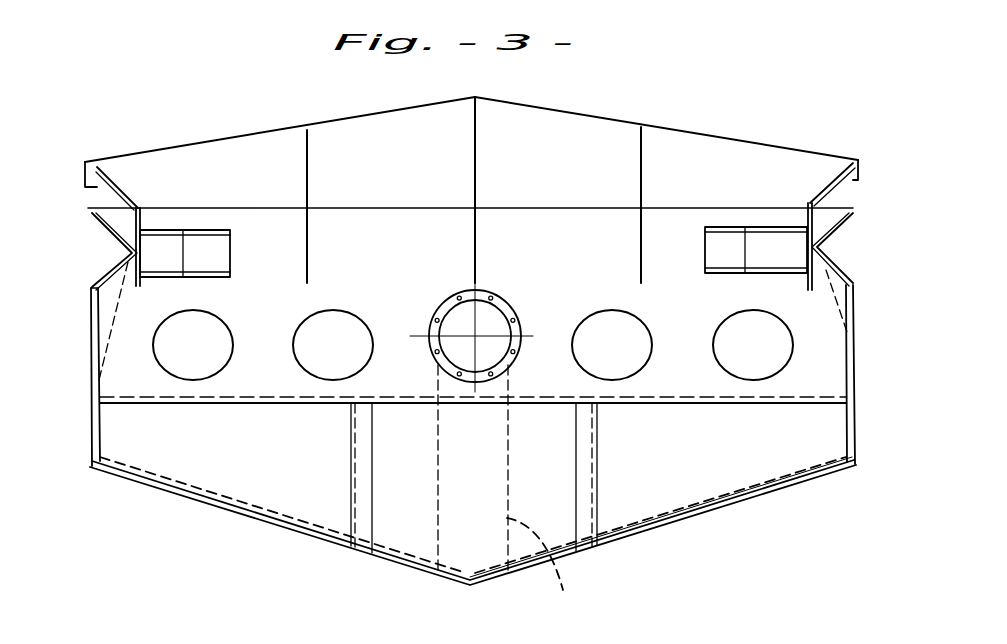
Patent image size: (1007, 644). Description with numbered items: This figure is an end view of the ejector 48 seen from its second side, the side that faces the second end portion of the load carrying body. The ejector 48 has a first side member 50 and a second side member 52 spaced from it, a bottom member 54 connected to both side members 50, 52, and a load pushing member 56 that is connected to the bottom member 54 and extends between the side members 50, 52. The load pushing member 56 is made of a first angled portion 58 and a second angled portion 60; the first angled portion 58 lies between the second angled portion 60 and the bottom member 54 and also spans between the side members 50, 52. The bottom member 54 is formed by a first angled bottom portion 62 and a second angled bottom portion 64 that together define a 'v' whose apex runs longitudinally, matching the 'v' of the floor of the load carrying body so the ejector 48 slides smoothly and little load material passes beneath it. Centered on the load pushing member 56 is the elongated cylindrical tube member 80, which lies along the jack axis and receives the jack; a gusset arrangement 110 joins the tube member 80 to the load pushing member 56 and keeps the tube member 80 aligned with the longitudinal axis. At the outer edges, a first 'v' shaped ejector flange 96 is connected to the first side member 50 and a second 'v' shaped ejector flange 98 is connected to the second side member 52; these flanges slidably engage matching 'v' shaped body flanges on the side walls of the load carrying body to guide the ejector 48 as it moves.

The ejector 48 is at (587, 142).
The first side member 50 is at (92, 352).
The second side member 52 is at (854, 330).
The bottom member 54 is at (173, 488).
The load pushing member 56 is at (705, 473).
The first angled portion 58 is at (263, 461).
The second angled portion 60 is at (400, 184).
The first angled bottom portion 62 is at (260, 518).
The second angled bottom portion 64 is at (638, 528).
The elongated cylindrical tube member 80 is at (497, 312).
The first 'v' shaped ejector flange 96 is at (836, 237).
The second 'v' shaped ejector flange 98 is at (110, 238).
The gusset arrangement 110 is at (558, 560).